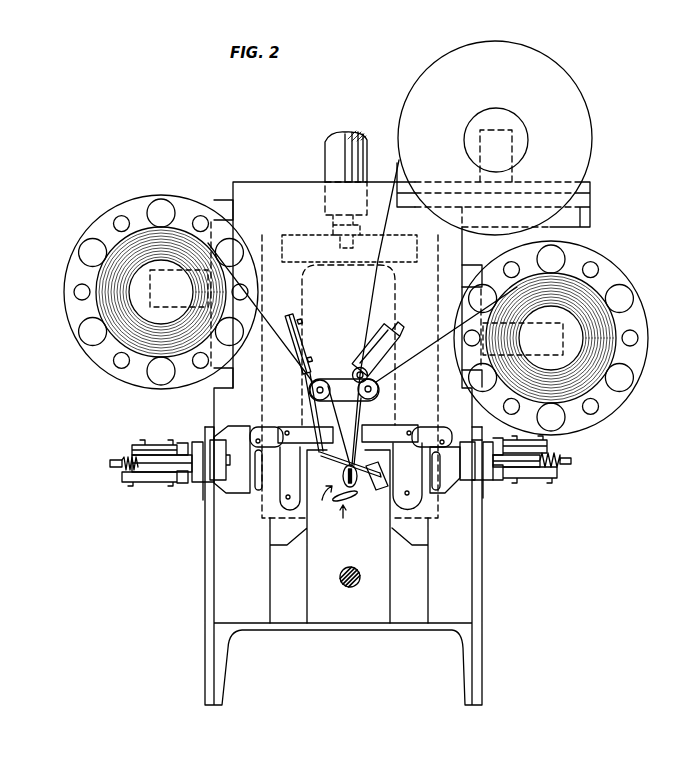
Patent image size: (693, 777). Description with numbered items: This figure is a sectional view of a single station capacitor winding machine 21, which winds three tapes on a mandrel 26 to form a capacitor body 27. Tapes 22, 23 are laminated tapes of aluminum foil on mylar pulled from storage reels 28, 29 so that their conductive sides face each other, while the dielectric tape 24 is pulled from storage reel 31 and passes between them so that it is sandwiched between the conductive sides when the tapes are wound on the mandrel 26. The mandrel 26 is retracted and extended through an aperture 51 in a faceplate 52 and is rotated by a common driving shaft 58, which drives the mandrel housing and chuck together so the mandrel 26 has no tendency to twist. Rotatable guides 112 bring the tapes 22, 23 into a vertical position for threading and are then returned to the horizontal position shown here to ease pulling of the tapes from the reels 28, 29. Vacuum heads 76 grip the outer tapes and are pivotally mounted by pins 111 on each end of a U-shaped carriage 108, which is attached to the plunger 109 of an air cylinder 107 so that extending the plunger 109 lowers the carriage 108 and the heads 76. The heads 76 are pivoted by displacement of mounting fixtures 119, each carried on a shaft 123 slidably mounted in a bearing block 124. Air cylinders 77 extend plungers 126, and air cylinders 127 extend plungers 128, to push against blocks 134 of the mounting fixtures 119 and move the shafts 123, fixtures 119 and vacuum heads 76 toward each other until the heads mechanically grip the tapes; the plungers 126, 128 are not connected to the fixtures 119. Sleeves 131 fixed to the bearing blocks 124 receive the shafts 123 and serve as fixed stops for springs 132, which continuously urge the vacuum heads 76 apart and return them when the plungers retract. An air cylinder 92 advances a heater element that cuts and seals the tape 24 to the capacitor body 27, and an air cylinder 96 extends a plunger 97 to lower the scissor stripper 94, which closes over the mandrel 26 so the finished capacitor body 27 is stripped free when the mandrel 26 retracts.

The single station capacitor winding machine 21 is at (161, 569).
The tape 22 is at (270, 316).
The tape 23 is at (434, 376).
The tape 24 is at (374, 283).
The mandrel 26 is at (329, 506).
The capacitor body 27 is at (353, 502).
The storage reel 28 is at (128, 198).
The storage reel 29 is at (616, 262).
The storage reel 31 is at (565, 70).
The aperture 51 is at (343, 476).
The faceplate 52 is at (373, 610).
The driving shaft 58 is at (357, 568).
The vacuum heads 76 is at (275, 428).
The air cylinders 77 is at (165, 430).
The air cylinder 92 is at (369, 529).
The scissor stripper 94 is at (340, 536).
The air cylinder 96 is at (305, 342).
The plunger 97 is at (300, 376).
The air cylinder 107 is at (325, 153).
The U-shaped carriage 108 is at (272, 235).
The plunger 109 is at (322, 228).
The pins 111 is at (286, 500).
The guides 112 is at (316, 392).
The mounting fixtures 119 is at (252, 408).
The shafts 123 is at (114, 460).
The bearing blocks 124 is at (199, 483).
The plungers 126 is at (207, 428).
The air cylinders 127 is at (128, 476).
The plungers 128 is at (207, 498).
The sleeves 131 is at (162, 463).
The springs 132 is at (130, 450).
The blocks 134 is at (218, 480).